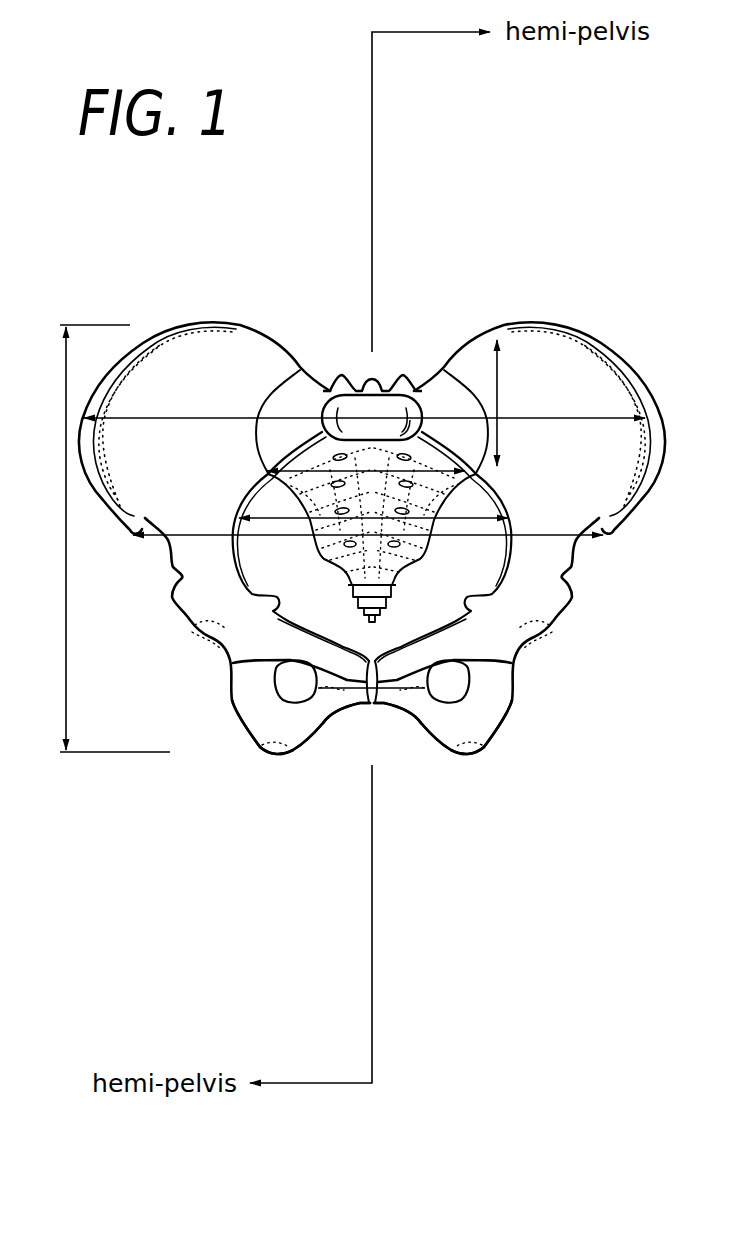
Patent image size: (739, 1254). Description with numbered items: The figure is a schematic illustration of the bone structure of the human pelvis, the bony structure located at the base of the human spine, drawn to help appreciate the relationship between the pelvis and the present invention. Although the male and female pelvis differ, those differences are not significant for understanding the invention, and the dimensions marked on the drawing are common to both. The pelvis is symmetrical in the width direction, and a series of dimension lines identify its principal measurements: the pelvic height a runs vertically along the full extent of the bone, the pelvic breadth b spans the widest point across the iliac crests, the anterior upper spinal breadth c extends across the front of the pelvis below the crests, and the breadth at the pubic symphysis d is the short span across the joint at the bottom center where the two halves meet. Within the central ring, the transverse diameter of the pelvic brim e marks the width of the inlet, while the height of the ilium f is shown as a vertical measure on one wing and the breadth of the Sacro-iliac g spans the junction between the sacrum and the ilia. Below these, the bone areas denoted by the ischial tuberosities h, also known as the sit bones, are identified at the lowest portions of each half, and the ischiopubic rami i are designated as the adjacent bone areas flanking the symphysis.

The pelvic height a is at (114, 522).
The pelvic breadth b is at (191, 412).
The anterior upper spinal breadth c is at (108, 552).
The breadth at the pubic symphysis d is at (381, 738).
The transverse diameter of the pelvic brim e is at (219, 524).
The height of the ilium f is at (523, 408).
The breadth of the Sacro-iliac g is at (248, 480).
The ischial tuberosities h is at (270, 740).
The ischiopubic rami i is at (324, 731).